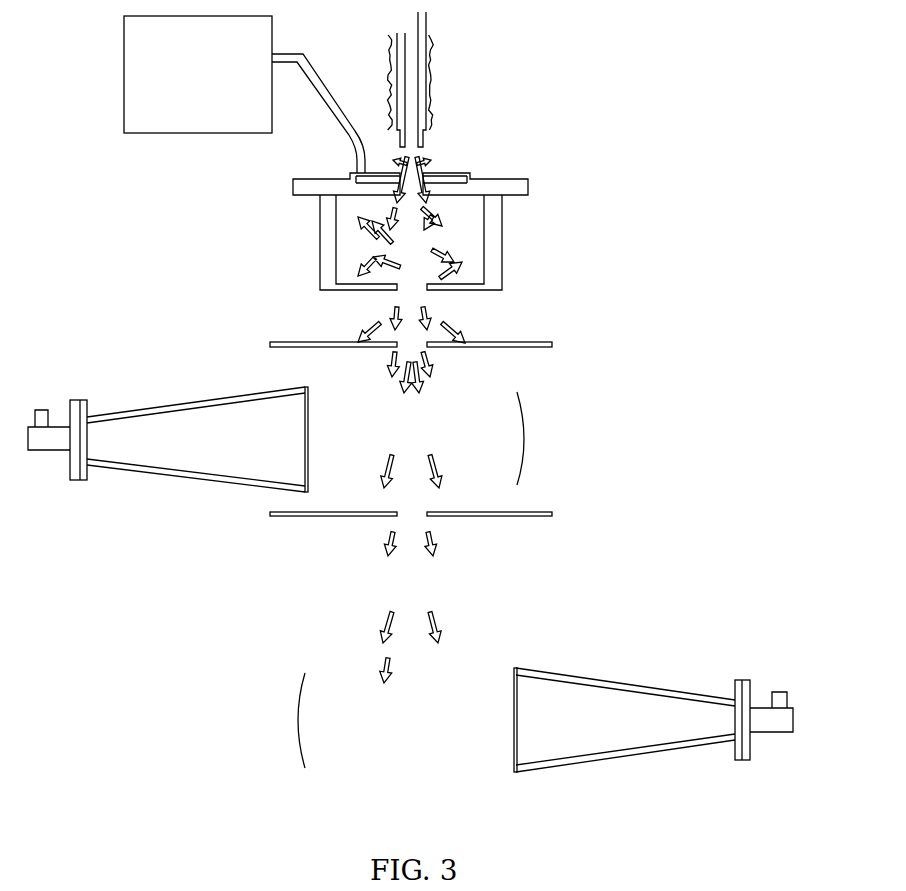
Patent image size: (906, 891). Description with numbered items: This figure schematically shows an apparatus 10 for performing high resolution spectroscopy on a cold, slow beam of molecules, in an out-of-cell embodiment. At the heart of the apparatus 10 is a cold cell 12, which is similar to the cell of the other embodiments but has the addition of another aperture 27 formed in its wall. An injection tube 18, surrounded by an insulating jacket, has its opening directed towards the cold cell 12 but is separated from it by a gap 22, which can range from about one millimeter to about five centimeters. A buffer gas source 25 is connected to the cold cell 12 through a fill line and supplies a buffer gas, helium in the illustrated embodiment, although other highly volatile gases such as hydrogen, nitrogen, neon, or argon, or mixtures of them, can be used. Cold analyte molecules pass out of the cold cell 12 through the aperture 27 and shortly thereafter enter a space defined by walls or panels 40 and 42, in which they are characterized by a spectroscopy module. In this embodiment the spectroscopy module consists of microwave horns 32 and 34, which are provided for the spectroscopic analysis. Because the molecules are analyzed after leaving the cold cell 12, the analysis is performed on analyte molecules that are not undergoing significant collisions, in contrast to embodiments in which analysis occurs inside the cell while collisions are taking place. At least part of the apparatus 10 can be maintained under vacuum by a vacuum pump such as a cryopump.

The apparatus 10 is at (612, 147).
The cold cell 12 is at (488, 240).
The injection tube 18 is at (435, 80).
The gap 22 is at (412, 160).
The buffer gas source 25 is at (216, 90).
The aperture 27 is at (420, 293).
The microwave horn 32 is at (262, 458).
The microwave horn 34 is at (595, 737).
The wall or panel 40 is at (552, 340).
The wall or panel 42 is at (552, 511).